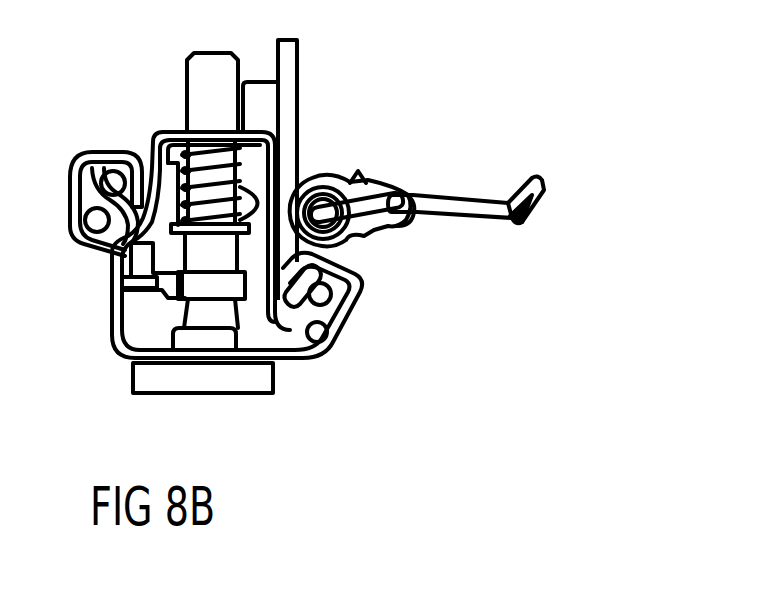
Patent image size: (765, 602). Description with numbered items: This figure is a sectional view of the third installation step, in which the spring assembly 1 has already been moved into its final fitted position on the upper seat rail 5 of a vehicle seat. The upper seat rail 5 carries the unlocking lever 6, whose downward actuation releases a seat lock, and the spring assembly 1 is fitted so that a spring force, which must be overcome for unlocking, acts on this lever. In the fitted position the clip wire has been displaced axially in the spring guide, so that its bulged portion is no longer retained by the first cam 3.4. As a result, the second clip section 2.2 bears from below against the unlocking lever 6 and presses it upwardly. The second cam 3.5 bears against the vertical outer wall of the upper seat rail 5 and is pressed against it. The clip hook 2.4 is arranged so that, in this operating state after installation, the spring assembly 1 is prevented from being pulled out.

The spring assembly 1 is at (383, 258).
The upper seat rail 5 is at (292, 50).
The clip hook 2.4 is at (357, 175).
The second clip section 2.2 is at (393, 207).
The first cam 3.4 is at (374, 232).
The unlocking lever 6 is at (537, 188).
The second cam 3.5 is at (293, 255).